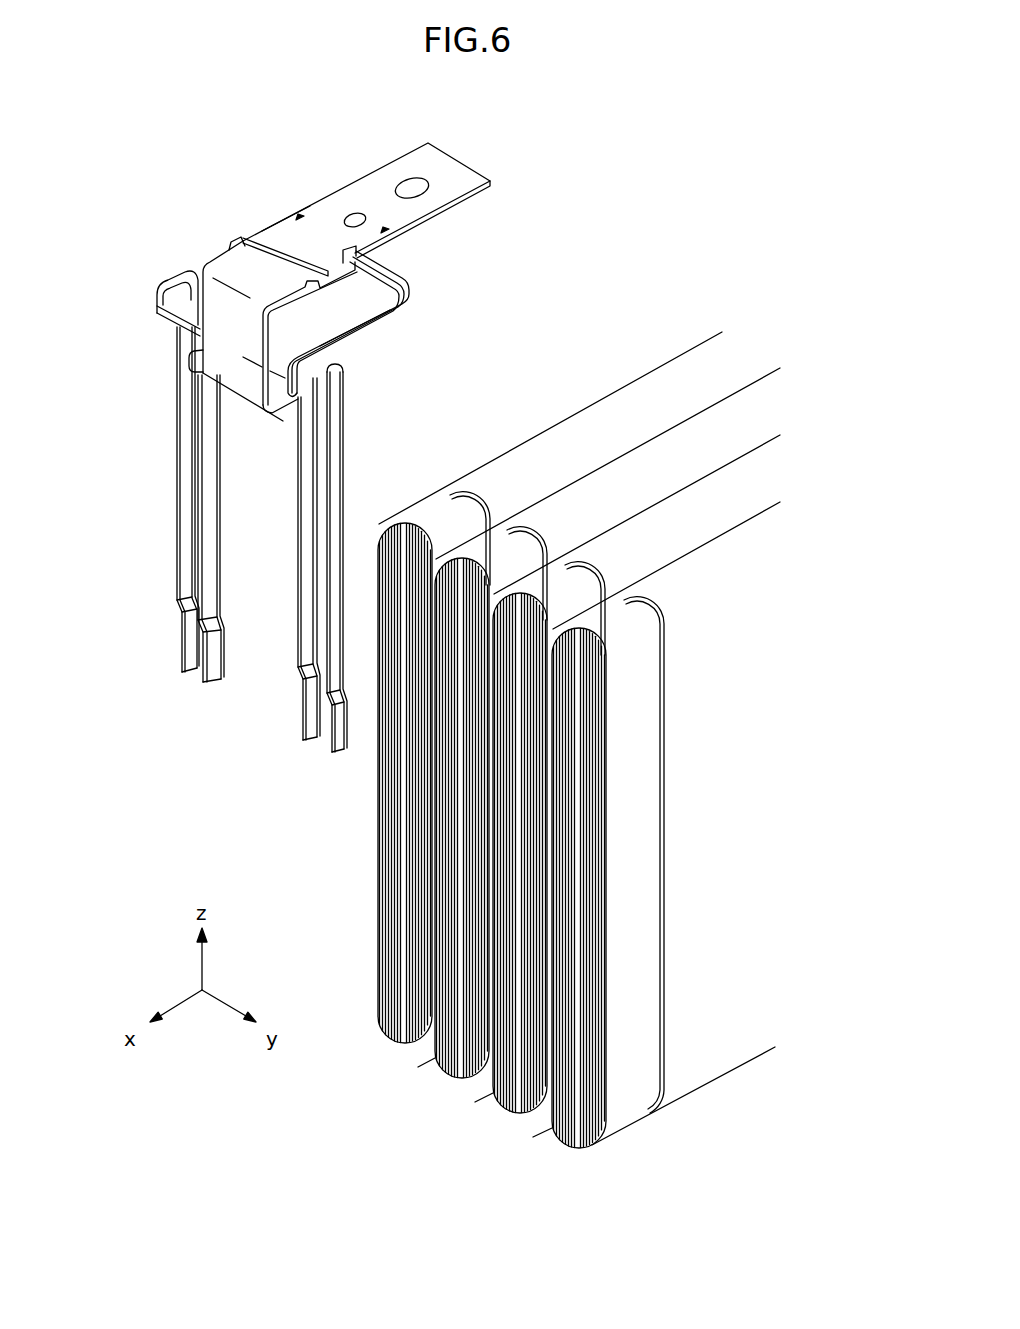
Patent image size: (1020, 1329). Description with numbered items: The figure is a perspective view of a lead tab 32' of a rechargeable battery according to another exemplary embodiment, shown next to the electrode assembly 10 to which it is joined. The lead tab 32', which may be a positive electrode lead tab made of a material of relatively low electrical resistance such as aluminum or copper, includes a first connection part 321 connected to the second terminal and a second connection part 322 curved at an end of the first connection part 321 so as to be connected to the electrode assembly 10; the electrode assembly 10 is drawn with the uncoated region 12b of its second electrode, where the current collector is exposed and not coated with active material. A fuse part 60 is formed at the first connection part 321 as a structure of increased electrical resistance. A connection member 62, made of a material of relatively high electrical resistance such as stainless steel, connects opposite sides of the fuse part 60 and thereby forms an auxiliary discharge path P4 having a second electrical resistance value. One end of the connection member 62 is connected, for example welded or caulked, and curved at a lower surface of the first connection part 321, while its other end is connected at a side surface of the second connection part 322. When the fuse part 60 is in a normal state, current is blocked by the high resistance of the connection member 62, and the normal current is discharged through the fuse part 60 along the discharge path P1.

The electrode assembly 10 is at (735, 1052).
The uncoated region 12b is at (623, 1107).
The lead tab 32' is at (303, 447).
The fuse part 60 is at (237, 238).
The connection member 62 is at (403, 290).
The first connection part 321 is at (465, 185).
The second connection part 322 is at (185, 547).
The discharge path P1 is at (283, 222).
The auxiliary discharge path P4 is at (350, 310).